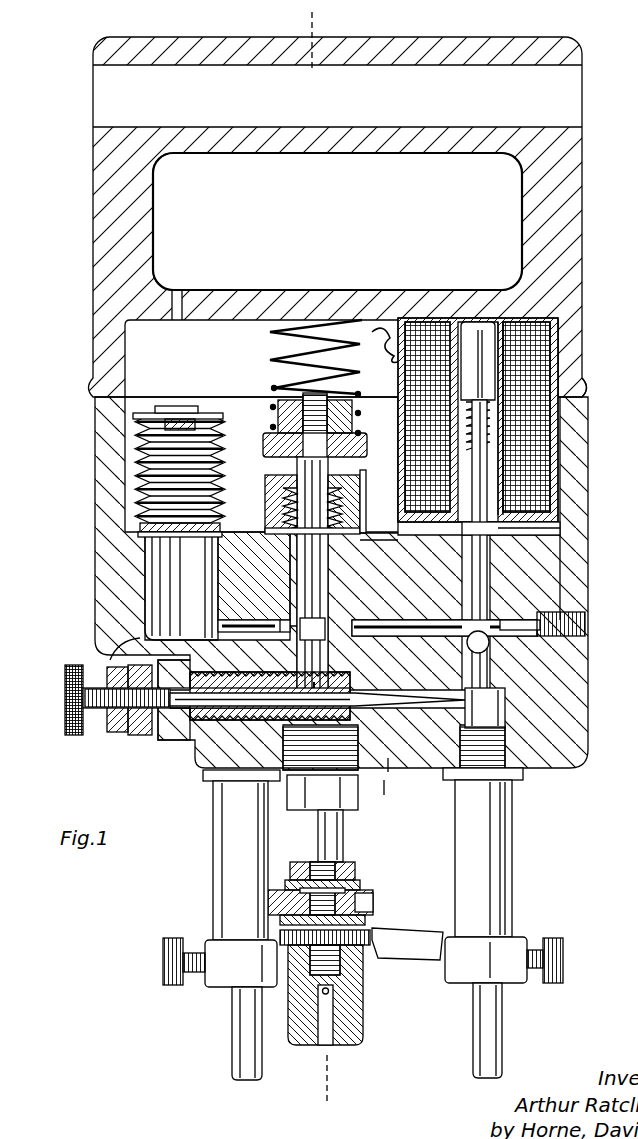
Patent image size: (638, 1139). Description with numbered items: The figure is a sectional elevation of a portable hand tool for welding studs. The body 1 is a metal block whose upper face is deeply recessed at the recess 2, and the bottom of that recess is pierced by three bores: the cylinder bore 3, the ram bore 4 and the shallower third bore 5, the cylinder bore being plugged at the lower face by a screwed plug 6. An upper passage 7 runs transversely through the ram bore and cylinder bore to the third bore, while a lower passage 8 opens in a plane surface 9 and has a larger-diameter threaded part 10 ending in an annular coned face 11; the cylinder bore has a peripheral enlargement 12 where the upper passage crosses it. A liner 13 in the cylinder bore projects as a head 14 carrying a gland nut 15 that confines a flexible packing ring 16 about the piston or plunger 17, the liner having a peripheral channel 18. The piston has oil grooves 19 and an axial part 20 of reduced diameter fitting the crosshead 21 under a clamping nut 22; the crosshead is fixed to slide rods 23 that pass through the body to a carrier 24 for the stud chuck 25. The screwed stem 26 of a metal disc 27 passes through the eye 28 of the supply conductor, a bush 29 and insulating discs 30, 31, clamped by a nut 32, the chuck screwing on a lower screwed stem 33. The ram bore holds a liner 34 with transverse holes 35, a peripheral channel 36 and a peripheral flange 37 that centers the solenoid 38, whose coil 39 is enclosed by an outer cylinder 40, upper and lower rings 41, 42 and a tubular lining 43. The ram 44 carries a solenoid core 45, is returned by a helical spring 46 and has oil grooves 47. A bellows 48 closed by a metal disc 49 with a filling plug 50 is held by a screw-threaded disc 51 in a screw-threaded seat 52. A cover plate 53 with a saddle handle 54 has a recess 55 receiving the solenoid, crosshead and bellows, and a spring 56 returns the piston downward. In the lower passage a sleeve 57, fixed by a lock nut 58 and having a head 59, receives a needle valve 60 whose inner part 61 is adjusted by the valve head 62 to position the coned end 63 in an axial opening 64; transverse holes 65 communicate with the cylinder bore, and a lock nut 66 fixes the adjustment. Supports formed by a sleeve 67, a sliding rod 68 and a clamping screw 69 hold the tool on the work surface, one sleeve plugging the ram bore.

The body 1 is at (572, 597).
The recess 2 is at (390, 440).
The cylinder bore 3 is at (262, 577).
The ram bore 4 is at (588, 647).
The third bore 5 is at (150, 598).
The screwed plug 6 is at (305, 812).
The upper passage 7 is at (340, 597).
The lower passage 8 is at (392, 766).
The plane surface 9 is at (182, 760).
The part of larger diameter 10 is at (195, 765).
The annular coned face 11 is at (386, 792).
The peripheral enlargement 12 is at (262, 600).
The liner 13 is at (380, 528).
The head 14 is at (364, 490).
The gland nut 15 is at (266, 483).
The flexible packing ring 16 is at (268, 503).
The piston or plunger 17 is at (285, 522).
The peripheral channel 18 is at (225, 629).
The peripheral oil grooves 19 is at (310, 627).
The axial part of reduced diameter 20 is at (263, 459).
The crosshead 21 is at (262, 432).
The clamping nut 22 is at (272, 404).
The slide rods 23 is at (340, 833).
The carrier 24 is at (375, 906).
The stud chuck 25 is at (363, 1040).
The screwed stem 26 is at (348, 863).
The metal disc 27 is at (358, 950).
The eye of the supply conductor 28 is at (380, 958).
The bush 29 is at (375, 900).
The insulating disc 30 is at (360, 890).
The insulating disc 31 is at (290, 922).
The nut 32 is at (355, 880).
The screwed stem 33 is at (358, 1018).
The liner 34 is at (576, 626).
The transverse holes 35 is at (490, 692).
The peripheral channel 36 is at (493, 670).
The peripheral flange 37 is at (545, 533).
The solenoid 38 is at (585, 381).
The coil 39 is at (530, 455).
The outer cylinder 40 is at (553, 488).
The upper ring 41 is at (503, 318).
The lower ring 42 is at (545, 520).
The tubular lining 43 is at (508, 431).
The ram 44 is at (522, 550).
The solenoid core 45 is at (500, 373).
The helical spring 46 is at (507, 413).
The peripheral oil grooves 47 is at (566, 576).
The bellows 48 is at (135, 462).
The metal disc 49 is at (134, 415).
The filling plug 50 is at (160, 405).
The peripherally screw-threaded disc 51 is at (147, 540).
The screw-threaded seat 52 is at (140, 527).
The cover plate 53 is at (572, 342).
The saddle handle 54 is at (487, 38).
The recess 55 is at (385, 318).
The spring 56 is at (350, 318).
The sleeve 57 is at (248, 780).
The lock nut 58 is at (152, 736).
The head 59 is at (125, 734).
The needle valve 60 is at (66, 698).
The inner part 61 is at (252, 702).
The valve head 62 is at (66, 670).
The coned end 63 is at (362, 782).
The axial opening 64 is at (462, 772).
The transverse holes 65 is at (318, 682).
The lock nut 66 is at (108, 660).
The sleeve 67 is at (215, 900).
The rod 68 is at (235, 1040).
The clamping screw 69 is at (160, 962).